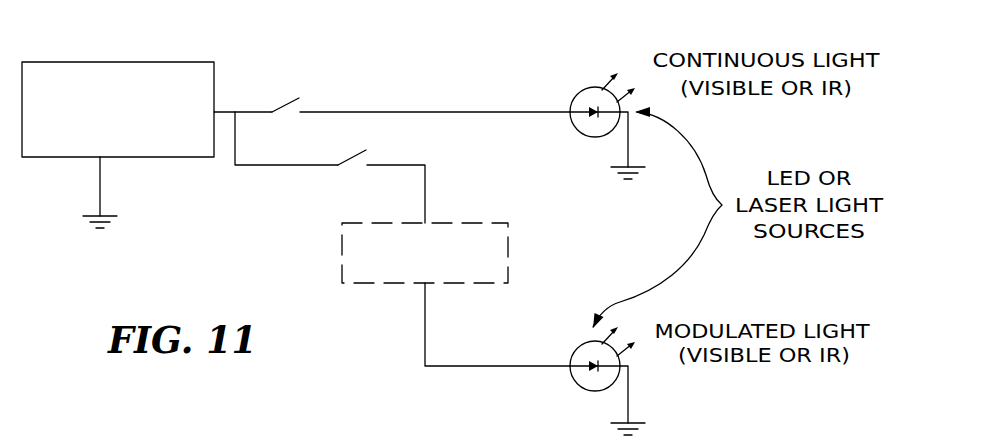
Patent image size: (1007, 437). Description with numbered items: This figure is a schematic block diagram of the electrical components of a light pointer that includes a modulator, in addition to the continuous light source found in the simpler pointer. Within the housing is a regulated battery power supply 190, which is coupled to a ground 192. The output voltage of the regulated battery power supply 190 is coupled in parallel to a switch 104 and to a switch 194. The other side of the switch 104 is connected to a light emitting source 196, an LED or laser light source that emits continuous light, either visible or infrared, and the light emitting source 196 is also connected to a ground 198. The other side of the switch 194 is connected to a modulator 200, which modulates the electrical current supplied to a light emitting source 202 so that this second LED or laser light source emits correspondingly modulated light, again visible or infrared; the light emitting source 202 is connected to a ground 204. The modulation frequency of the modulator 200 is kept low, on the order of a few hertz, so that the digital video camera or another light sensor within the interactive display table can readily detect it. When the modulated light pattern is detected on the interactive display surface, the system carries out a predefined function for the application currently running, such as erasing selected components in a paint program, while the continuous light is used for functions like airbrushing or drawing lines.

The regulated battery power supply 190 is at (90, 62).
The ground 192 is at (102, 199).
The switch 104 is at (287, 101).
The switch 194 is at (357, 147).
The light emitting source 196 is at (597, 87).
The ground 198 is at (655, 152).
The modulator 200 is at (340, 240).
The light emitting source 202 is at (573, 375).
The ground 204 is at (628, 407).